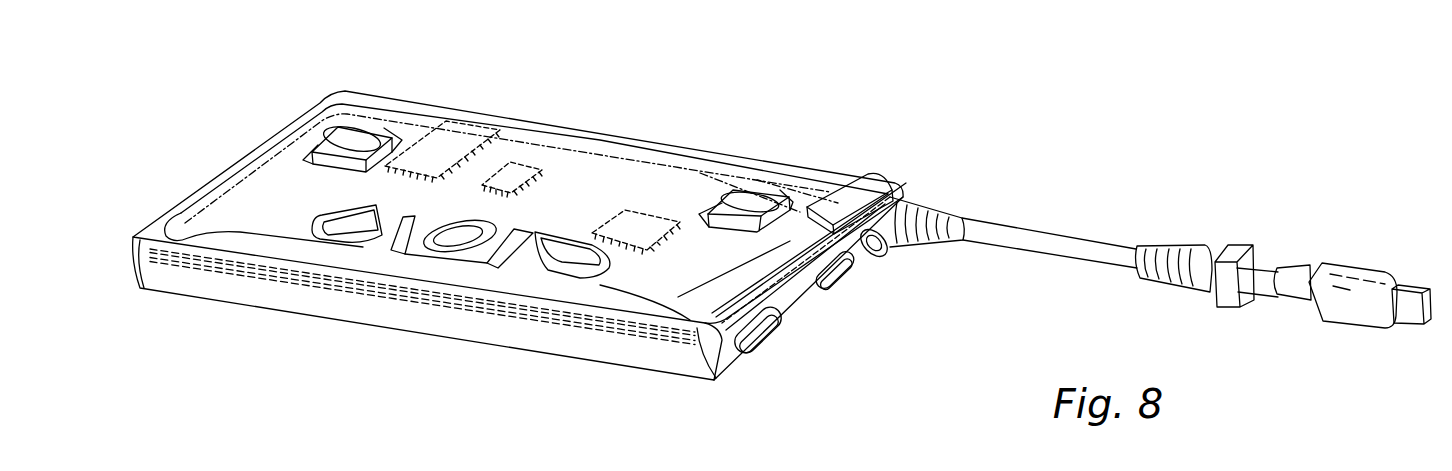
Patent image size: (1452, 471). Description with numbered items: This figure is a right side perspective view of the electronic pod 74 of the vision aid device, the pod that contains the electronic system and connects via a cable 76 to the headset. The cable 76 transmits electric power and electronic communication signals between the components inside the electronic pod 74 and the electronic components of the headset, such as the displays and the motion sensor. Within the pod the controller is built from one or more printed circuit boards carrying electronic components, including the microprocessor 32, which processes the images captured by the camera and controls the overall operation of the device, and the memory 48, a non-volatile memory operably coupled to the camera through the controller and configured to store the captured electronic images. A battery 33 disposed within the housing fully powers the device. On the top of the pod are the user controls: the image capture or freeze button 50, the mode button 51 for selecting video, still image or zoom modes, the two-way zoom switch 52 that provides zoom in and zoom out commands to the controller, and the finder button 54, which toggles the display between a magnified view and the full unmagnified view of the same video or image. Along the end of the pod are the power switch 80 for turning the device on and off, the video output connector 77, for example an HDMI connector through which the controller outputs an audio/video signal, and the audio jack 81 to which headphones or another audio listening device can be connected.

The microprocessor 32 is at (433, 148).
The battery 33 is at (816, 206).
The memory 48 is at (518, 172).
The image capture button 50 is at (755, 196).
The mode button 51 is at (333, 140).
The zoom switch 52 is at (350, 222).
The finder button 54 is at (443, 250).
The electronic pod 74 is at (1141, 293).
The cable 76 is at (1068, 244).
The video output connector 77 is at (762, 333).
The power switch 80 is at (836, 276).
The audio jack 81 is at (882, 250).